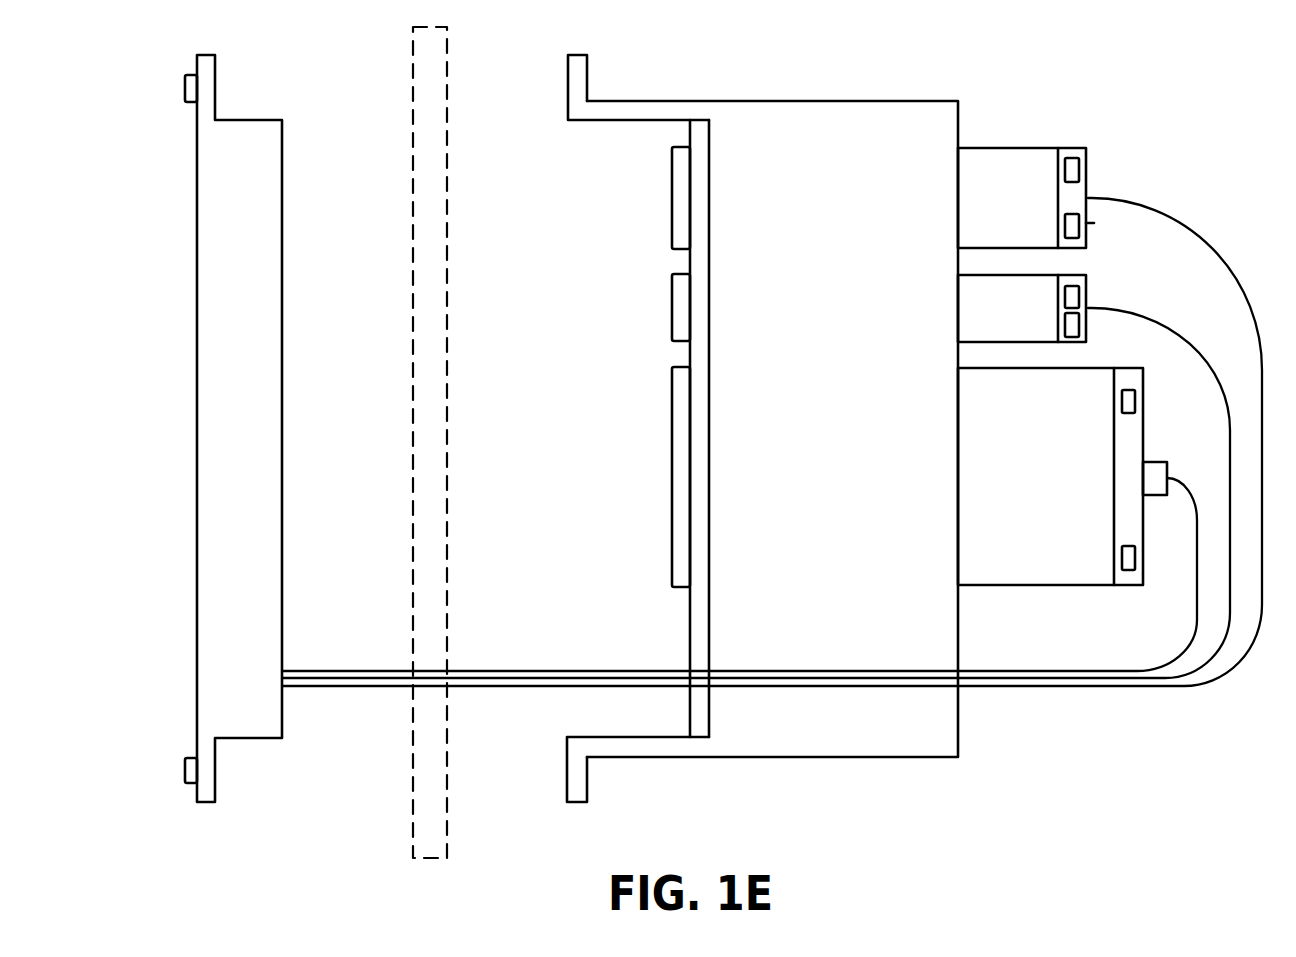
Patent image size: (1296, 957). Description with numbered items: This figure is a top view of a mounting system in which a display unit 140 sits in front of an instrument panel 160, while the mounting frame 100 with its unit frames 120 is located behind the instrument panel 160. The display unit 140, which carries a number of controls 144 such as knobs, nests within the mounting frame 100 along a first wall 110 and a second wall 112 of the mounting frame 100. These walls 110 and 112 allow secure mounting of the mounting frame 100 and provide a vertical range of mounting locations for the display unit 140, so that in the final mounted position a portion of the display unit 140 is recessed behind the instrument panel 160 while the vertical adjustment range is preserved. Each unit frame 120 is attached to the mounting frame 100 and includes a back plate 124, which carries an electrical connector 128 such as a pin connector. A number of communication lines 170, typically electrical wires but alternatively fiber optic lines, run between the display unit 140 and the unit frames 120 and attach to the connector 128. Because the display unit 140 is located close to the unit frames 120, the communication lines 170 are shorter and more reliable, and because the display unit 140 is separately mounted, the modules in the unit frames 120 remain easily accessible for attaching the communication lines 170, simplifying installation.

The mounting frame 100 is at (843, 430).
The first wall 110 is at (620, 122).
The second wall 112 is at (626, 737).
The unit frame 120 is at (1056, 492).
The back plate 124 is at (1133, 523).
The electrical connector 128 is at (1168, 464).
The display unit 140 is at (196, 432).
The controls 144 is at (185, 89).
The instrument panel 160 is at (412, 796).
The communication lines 170 is at (1137, 703).